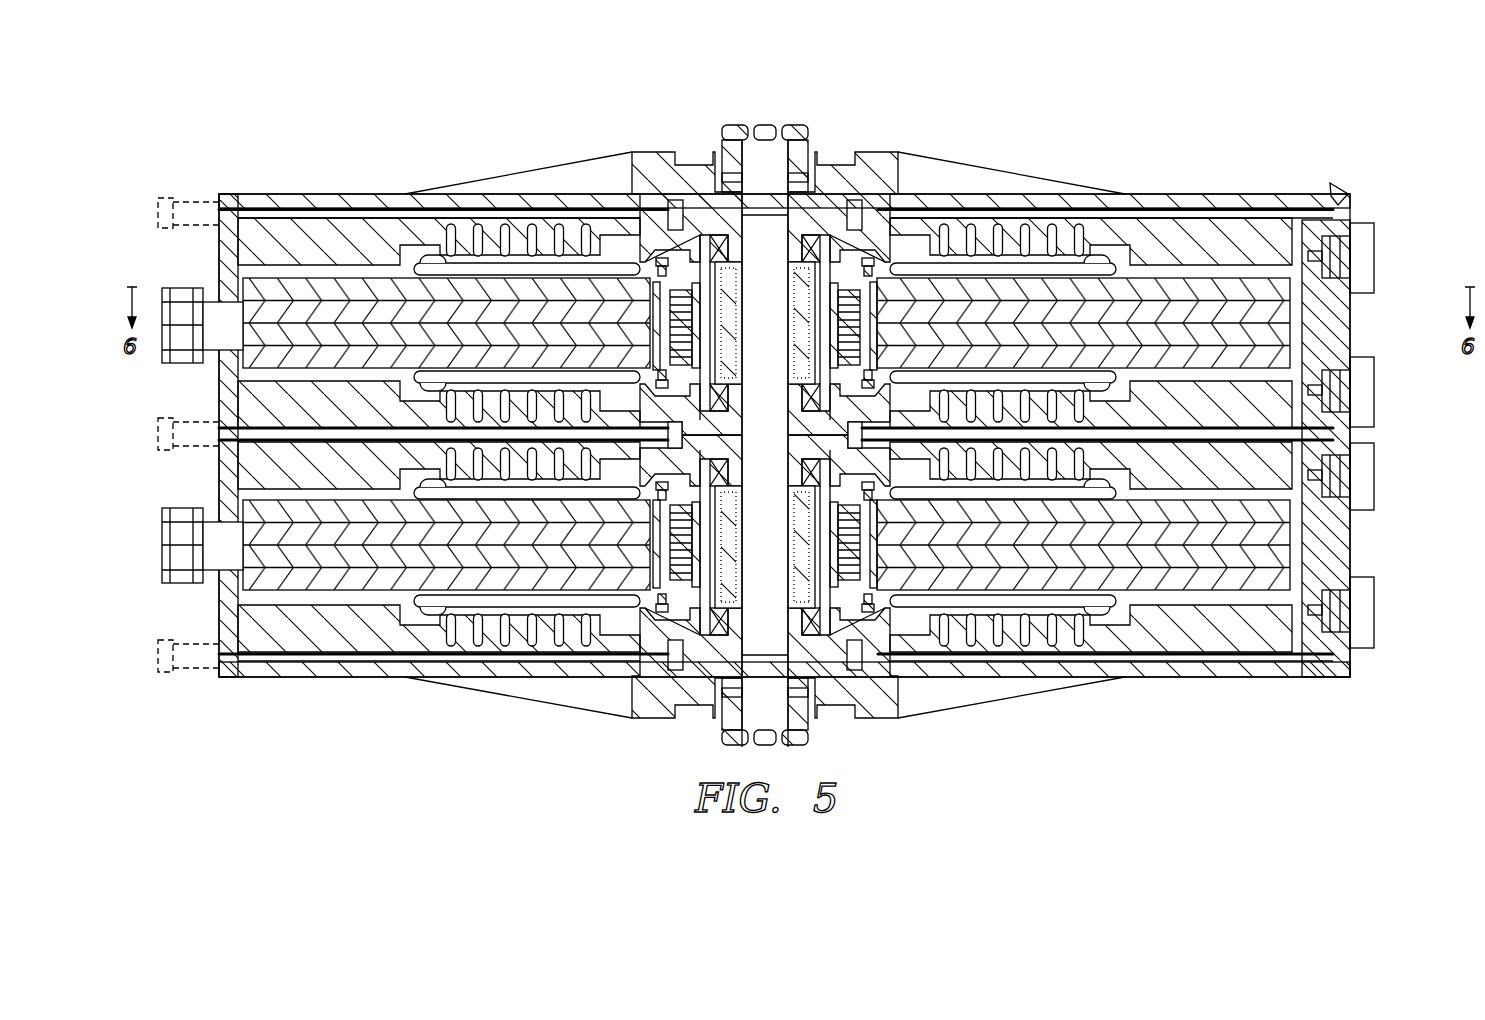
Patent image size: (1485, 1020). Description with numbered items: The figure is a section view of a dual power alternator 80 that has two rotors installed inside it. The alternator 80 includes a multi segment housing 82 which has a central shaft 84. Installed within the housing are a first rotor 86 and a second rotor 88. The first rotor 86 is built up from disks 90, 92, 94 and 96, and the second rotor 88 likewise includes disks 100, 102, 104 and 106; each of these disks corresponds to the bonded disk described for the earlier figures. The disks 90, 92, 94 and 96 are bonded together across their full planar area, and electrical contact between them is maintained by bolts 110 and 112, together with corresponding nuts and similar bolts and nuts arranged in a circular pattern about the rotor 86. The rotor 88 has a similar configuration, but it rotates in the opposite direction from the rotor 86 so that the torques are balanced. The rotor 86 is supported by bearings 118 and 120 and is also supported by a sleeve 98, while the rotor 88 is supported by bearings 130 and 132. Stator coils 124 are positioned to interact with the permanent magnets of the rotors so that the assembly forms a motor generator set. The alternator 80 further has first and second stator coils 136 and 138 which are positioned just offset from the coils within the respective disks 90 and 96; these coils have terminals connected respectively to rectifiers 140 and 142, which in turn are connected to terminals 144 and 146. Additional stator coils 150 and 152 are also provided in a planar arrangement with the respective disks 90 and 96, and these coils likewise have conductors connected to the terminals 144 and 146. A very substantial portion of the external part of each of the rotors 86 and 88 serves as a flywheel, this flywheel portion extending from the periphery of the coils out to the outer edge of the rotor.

The dual power alternator 80 is at (1106, 98).
The multi segment housing 82 is at (998, 695).
The central shaft 84 is at (780, 549).
The first rotor 86 is at (1306, 300).
The second rotor 88 is at (1306, 518).
The disk 90 is at (1252, 287).
The disk 92 is at (1228, 313).
The disk 94 is at (1180, 333).
The disk 96 is at (1140, 353).
The sleeve 98 is at (817, 340).
The disk 100 is at (1163, 507).
The disk 102 is at (1203, 530).
The disk 104 is at (1235, 553).
The disk 106 is at (1280, 573).
The bolt 110 is at (872, 253).
The bolt 112 is at (662, 253).
The bearing 118 is at (805, 247).
The bearing 120 is at (803, 390).
The stator coils 124 is at (797, 330).
The bearing 130 is at (810, 617).
The bearing 132 is at (805, 477).
The first stator coil 136 is at (1072, 267).
The second stator coil 138 is at (1057, 383).
The rectifier 140 is at (1340, 200).
The rectifier 142 is at (1345, 393).
The terminal 144 is at (1376, 238).
The terminal 146 is at (1376, 372).
The stator coil 150 is at (462, 263).
The stator coil 152 is at (420, 387).